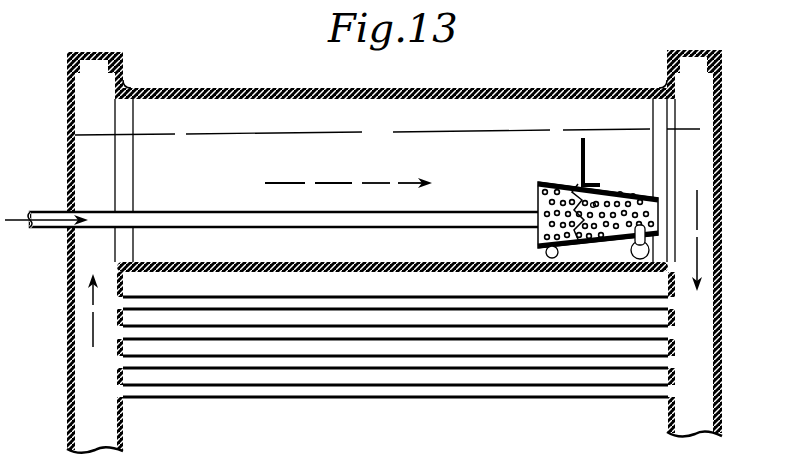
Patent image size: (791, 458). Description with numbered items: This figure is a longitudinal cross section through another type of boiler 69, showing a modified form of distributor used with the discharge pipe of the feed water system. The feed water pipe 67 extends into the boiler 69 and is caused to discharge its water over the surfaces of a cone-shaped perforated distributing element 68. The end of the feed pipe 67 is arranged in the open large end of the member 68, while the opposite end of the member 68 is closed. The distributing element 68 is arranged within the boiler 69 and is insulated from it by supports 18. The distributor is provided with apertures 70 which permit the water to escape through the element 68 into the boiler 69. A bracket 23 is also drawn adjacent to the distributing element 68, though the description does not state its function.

The supports 18 is at (630, 252).
The bracket 23 is at (588, 138).
The feed water pipe 67 is at (198, 212).
The cone-shaped perforated distributing element 68 is at (543, 181).
The boiler 69 is at (498, 88).
The apertures 70 is at (594, 203).